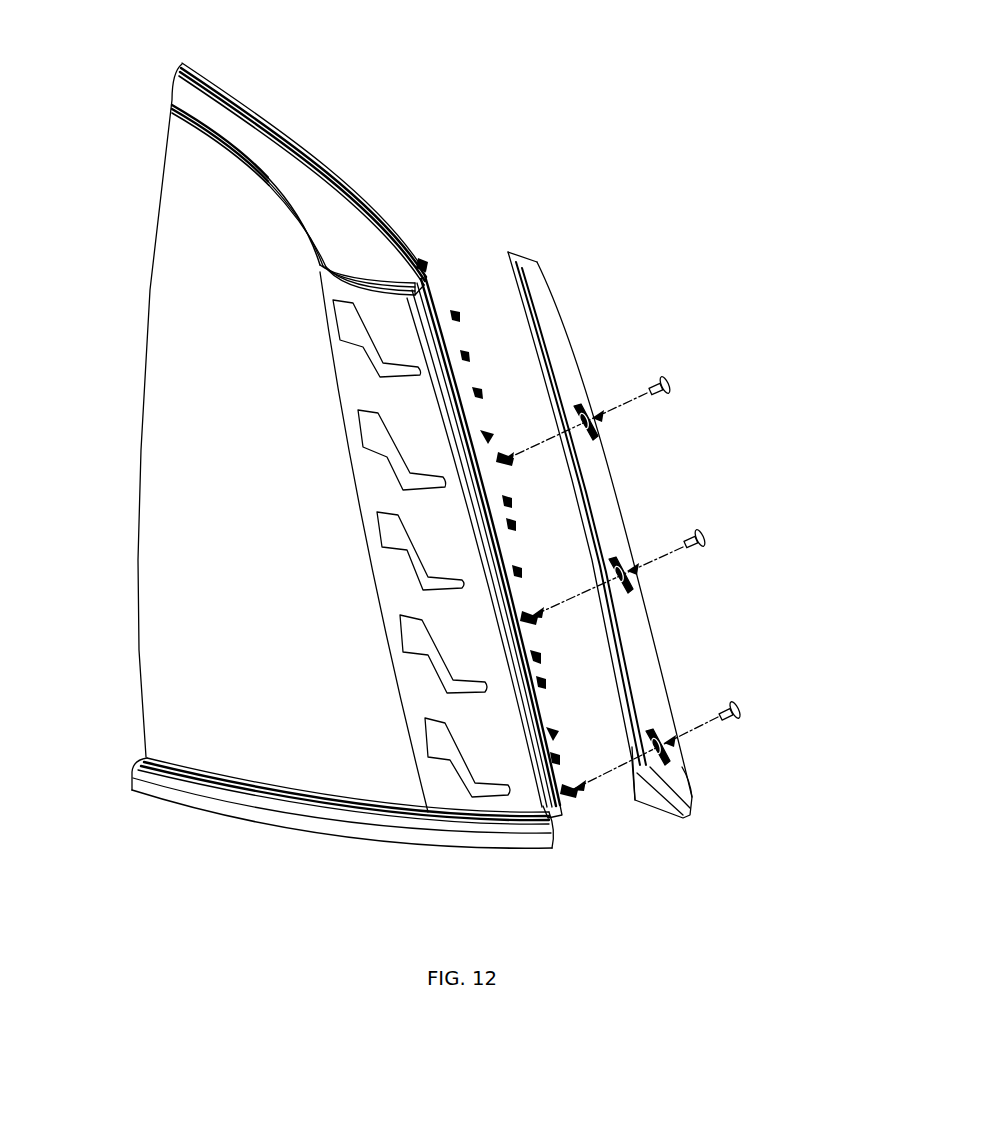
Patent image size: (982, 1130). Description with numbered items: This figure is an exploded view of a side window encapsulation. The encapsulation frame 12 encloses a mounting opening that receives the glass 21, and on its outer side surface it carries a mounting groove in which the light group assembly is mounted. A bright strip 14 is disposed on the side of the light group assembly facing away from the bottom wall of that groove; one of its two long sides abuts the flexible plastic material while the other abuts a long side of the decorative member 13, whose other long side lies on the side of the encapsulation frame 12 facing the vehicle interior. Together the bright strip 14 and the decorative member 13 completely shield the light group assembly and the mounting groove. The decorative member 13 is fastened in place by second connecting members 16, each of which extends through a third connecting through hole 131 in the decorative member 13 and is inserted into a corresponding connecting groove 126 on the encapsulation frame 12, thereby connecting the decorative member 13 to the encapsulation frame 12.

The encapsulation frame 12 is at (262, 143).
The decorative member 13 is at (563, 333).
The bright strip 14 is at (413, 311).
The second connecting member 16 is at (672, 385).
The glass 21 is at (180, 312).
The connecting groove 126 is at (508, 460).
The third connecting through hole 131 is at (600, 417).